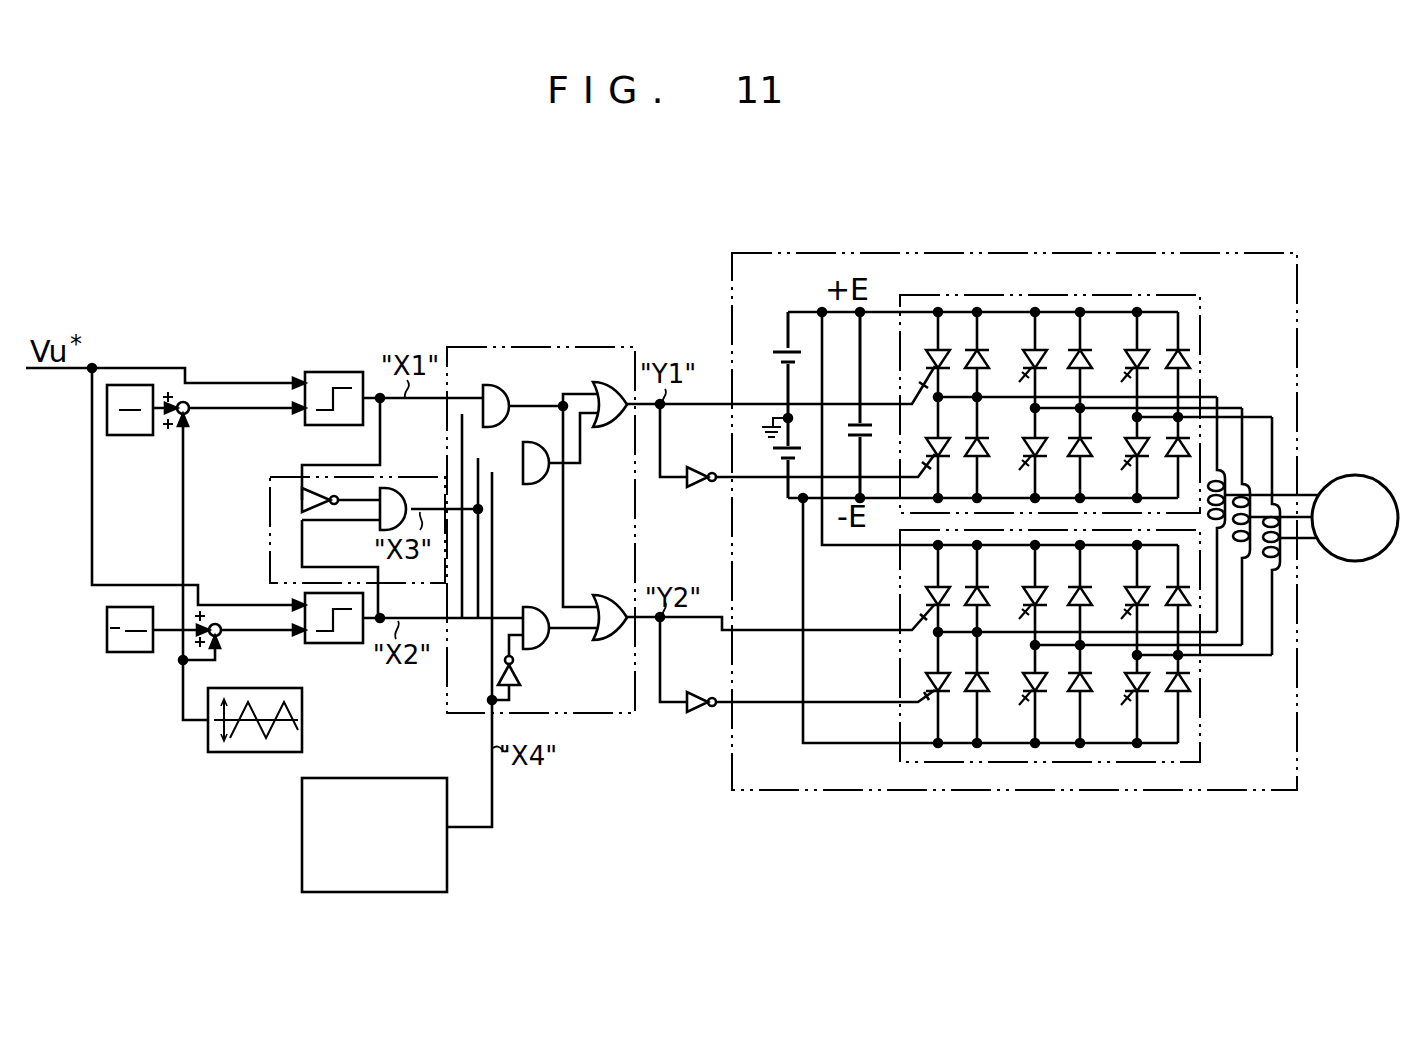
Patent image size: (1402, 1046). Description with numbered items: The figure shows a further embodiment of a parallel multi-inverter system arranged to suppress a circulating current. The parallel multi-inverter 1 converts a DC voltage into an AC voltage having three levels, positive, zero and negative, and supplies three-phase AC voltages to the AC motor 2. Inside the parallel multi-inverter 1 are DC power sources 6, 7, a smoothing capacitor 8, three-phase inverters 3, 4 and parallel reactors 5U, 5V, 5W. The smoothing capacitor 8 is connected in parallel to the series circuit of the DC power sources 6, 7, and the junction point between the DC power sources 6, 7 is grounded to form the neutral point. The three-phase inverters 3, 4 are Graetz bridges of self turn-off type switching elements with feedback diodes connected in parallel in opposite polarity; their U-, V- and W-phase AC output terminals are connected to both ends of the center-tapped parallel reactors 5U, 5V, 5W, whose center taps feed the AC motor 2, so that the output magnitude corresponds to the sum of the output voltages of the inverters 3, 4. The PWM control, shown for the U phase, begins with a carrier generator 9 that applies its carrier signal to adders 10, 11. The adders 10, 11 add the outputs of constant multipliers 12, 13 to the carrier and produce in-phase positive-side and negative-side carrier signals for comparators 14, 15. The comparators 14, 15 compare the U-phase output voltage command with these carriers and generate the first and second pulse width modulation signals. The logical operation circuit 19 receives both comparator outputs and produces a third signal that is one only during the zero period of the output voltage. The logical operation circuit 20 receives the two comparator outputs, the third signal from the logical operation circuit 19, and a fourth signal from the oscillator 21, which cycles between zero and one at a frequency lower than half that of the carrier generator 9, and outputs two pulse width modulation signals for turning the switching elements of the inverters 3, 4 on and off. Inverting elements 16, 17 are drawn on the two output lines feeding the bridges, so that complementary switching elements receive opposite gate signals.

The parallel multi-inverter 1 is at (1159, 253).
The AC motor 2 is at (1360, 476).
The three-phase inverter 3 is at (1200, 320).
The three-phase inverter 4 is at (1200, 718).
The parallel reactor 5U is at (1228, 474).
The parallel reactor 5V is at (1251, 488).
The parallel reactor 5W is at (1282, 566).
The DC power source 6 is at (770, 350).
The DC power source 7 is at (800, 452).
The smoothing capacitor 8 is at (872, 428).
The carrier generator 9 is at (302, 718).
The adder 10 is at (189, 412).
The adder 11 is at (221, 634).
The constant multiplier 12 is at (132, 435).
The constant multiplier 13 is at (125, 652).
The comparator 14 is at (340, 371).
The comparator 15 is at (340, 643).
The inverter (NOT gate) 16 is at (701, 465).
The inverter (NOT gate) 17 is at (695, 690).
The logical operation circuit 19 is at (270, 530).
The logical operation circuit 20 is at (586, 346).
The oscillator 21 is at (302, 828).